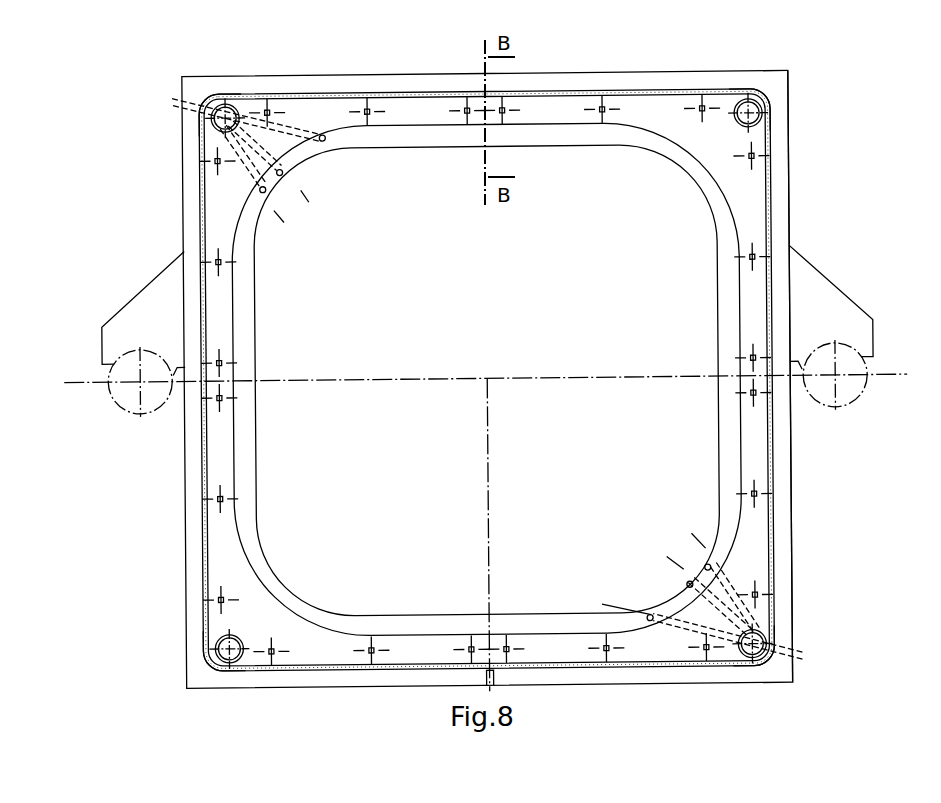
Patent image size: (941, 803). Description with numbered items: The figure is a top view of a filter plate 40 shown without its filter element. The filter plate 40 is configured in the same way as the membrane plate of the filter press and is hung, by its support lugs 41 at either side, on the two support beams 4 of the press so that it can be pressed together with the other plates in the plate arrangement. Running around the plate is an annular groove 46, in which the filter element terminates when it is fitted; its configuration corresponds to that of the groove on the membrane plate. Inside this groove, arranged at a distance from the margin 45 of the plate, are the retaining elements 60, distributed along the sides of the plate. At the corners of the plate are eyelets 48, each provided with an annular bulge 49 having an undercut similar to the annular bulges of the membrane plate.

The support beam 4 is at (116, 400).
The filter plate 40 is at (707, 68).
The support lug 41 is at (139, 295).
The margin 45 is at (797, 170).
The annular groove 46 is at (620, 88).
The eyelet 48 is at (204, 106).
The annular bulge 49 is at (214, 104).
The retaining element 60 is at (758, 497).